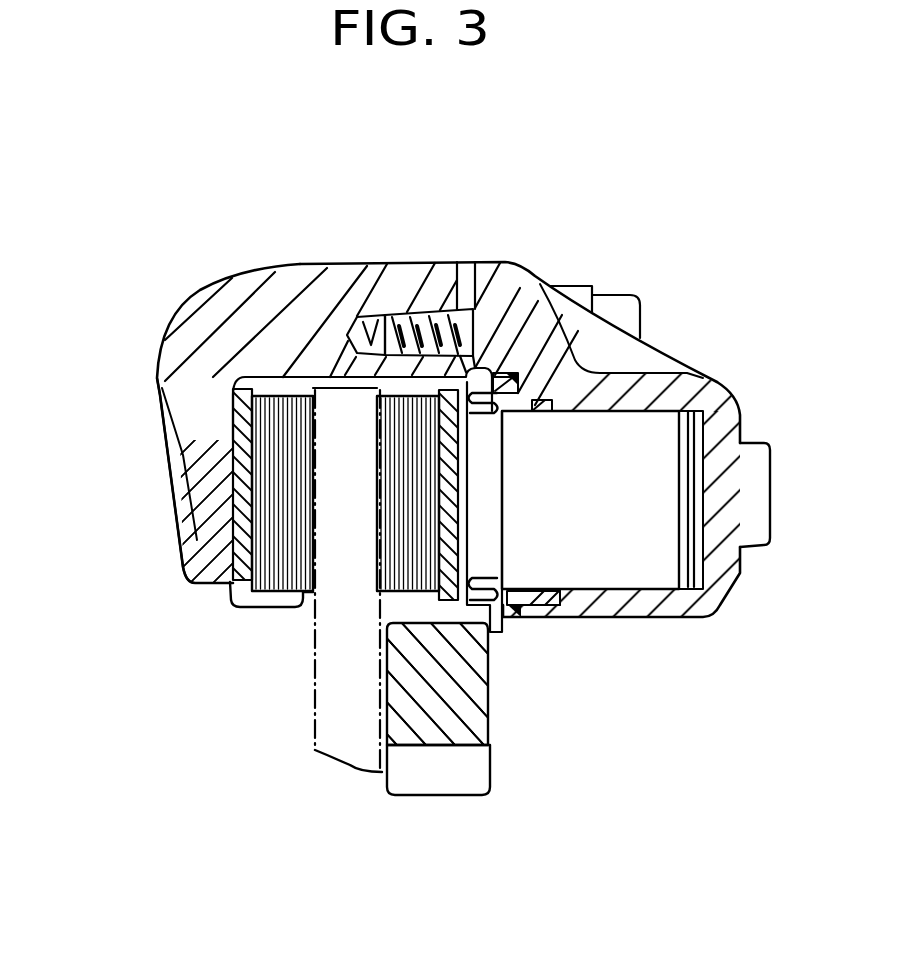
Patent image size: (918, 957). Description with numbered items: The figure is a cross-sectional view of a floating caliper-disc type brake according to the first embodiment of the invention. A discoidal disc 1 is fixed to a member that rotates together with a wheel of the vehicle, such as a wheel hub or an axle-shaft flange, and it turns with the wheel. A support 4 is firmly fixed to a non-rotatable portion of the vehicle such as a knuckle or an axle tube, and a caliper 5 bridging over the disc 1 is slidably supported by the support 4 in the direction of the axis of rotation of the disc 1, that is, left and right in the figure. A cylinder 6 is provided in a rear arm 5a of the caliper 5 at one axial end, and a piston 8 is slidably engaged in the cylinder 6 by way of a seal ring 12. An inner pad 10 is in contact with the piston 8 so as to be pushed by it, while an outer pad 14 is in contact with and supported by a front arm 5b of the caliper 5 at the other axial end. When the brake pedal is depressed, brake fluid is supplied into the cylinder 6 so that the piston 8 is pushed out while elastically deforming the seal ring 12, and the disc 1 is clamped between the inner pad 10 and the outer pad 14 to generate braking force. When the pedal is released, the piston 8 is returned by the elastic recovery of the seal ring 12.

The disc 1 is at (325, 753).
The support 4 is at (467, 780).
The caliper 5 is at (383, 248).
The rear arm 5a is at (710, 397).
The front arm 5b is at (197, 493).
The cylinder 6 is at (660, 578).
The piston 8 is at (613, 553).
The inner pad 10 is at (490, 695).
The seal ring 12 is at (544, 600).
The outer pad 14 is at (270, 596).